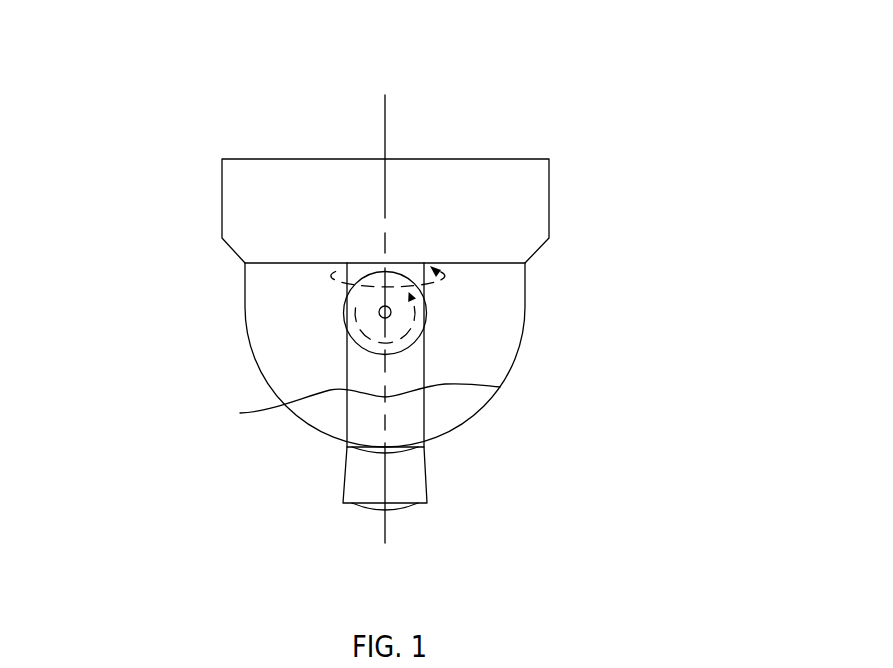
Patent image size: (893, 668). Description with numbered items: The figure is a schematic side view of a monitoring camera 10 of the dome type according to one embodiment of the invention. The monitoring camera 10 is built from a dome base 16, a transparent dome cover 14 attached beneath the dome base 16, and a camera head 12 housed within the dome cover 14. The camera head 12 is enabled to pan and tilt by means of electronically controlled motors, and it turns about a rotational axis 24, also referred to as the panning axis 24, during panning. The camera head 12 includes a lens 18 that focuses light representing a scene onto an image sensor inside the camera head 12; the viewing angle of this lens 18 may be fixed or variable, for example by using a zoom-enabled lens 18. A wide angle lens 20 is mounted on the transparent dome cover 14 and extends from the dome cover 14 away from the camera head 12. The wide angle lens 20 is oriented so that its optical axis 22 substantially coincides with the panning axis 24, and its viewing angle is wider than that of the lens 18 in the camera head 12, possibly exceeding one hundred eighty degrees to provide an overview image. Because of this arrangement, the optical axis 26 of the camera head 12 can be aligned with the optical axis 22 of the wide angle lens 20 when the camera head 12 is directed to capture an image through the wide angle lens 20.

The monitoring camera 10 is at (124, 116).
The camera head 12 is at (500, 387).
The transparent dome cover 14 is at (525, 332).
The dome base 16 is at (273, 158).
The lens 18 is at (408, 447).
The wide angle lens 20 is at (402, 508).
The optical axis 22 is at (384, 528).
The rotational axis 24 is at (385, 109).
The optical axis 26 is at (240, 413).